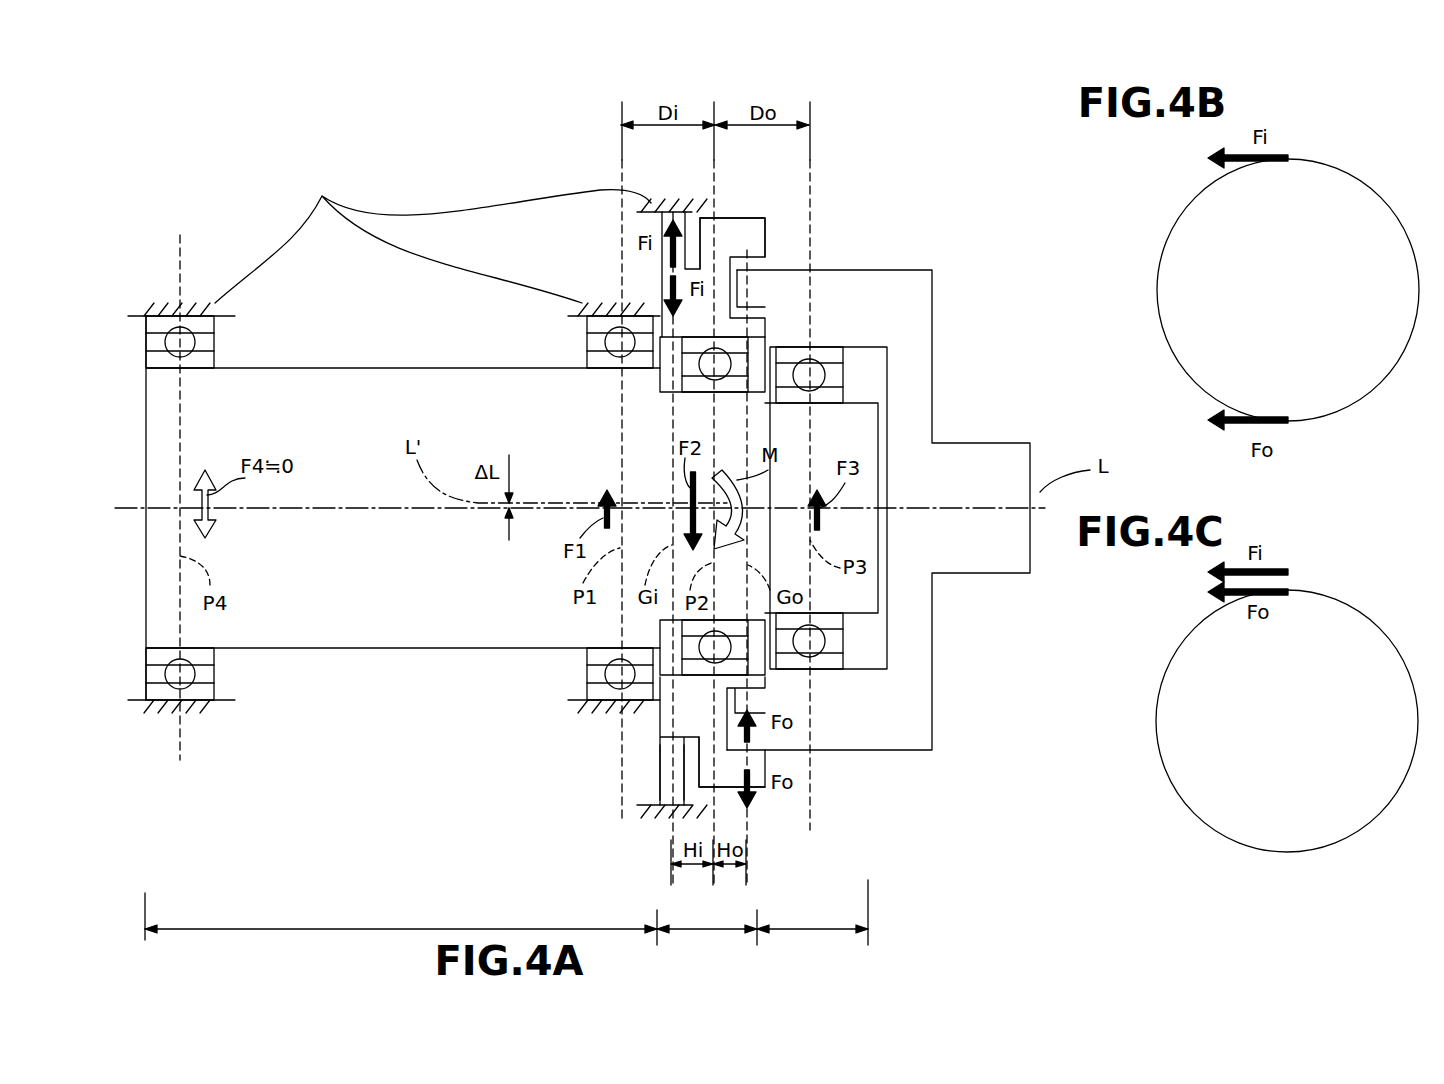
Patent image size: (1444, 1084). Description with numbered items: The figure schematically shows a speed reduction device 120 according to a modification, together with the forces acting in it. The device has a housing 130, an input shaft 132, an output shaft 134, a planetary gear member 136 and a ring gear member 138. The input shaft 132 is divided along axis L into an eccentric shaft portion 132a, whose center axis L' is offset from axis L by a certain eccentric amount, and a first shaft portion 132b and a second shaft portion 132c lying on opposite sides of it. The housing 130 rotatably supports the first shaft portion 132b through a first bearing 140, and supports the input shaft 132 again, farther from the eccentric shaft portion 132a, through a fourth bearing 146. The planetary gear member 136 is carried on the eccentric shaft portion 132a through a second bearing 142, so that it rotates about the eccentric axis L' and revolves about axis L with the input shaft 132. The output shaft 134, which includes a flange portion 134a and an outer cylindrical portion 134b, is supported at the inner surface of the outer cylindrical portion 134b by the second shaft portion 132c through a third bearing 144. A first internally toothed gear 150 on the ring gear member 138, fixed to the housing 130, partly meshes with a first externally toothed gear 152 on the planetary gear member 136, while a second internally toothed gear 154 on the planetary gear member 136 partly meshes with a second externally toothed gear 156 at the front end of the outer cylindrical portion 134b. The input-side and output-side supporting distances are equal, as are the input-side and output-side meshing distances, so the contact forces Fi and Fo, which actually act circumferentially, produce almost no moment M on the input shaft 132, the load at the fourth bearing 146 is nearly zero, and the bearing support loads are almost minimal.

In FIG. 4A, the speed reduction device 120 is at (375, 98).
In FIG. 4A, the housing 130 is at (433, 234).
In FIG. 4A, the input shaft 132 is at (447, 632).
In FIG. 4A, the eccentric shaft portion 132a is at (707, 924).
In FIG. 4A, the first shaft portion 132b is at (401, 919).
In FIG. 4A, the second shaft portion 132c is at (812, 912).
In FIG. 4A, the output shaft 134 is at (888, 478).
In FIG. 4A, the flange portion 134a is at (920, 370).
In FIG. 4A, the outer cylindrical portion 134b is at (858, 292).
In FIG. 4A, the planetary gear member 136 is at (728, 230).
In FIG. 4B, the planetary gear member 136 is at (1350, 188).
In FIG. 4A, the ring gear member 138 is at (667, 787).
In FIG. 4A, the first bearing 140 is at (615, 340).
In FIG. 4A, the second bearing 142 is at (720, 358).
In FIG. 4A, the third bearing 144 is at (832, 355).
In FIG. 4A, the fourth bearing 146 is at (174, 335).
In FIG. 4A, the first internally toothed gear 150 is at (685, 755).
In FIG. 4A, the first externally toothed gear 152 is at (665, 749).
In FIG. 4A, the second internally toothed gear 154 is at (760, 265).
In FIG. 4A, the second externally toothed gear 156 is at (740, 262).